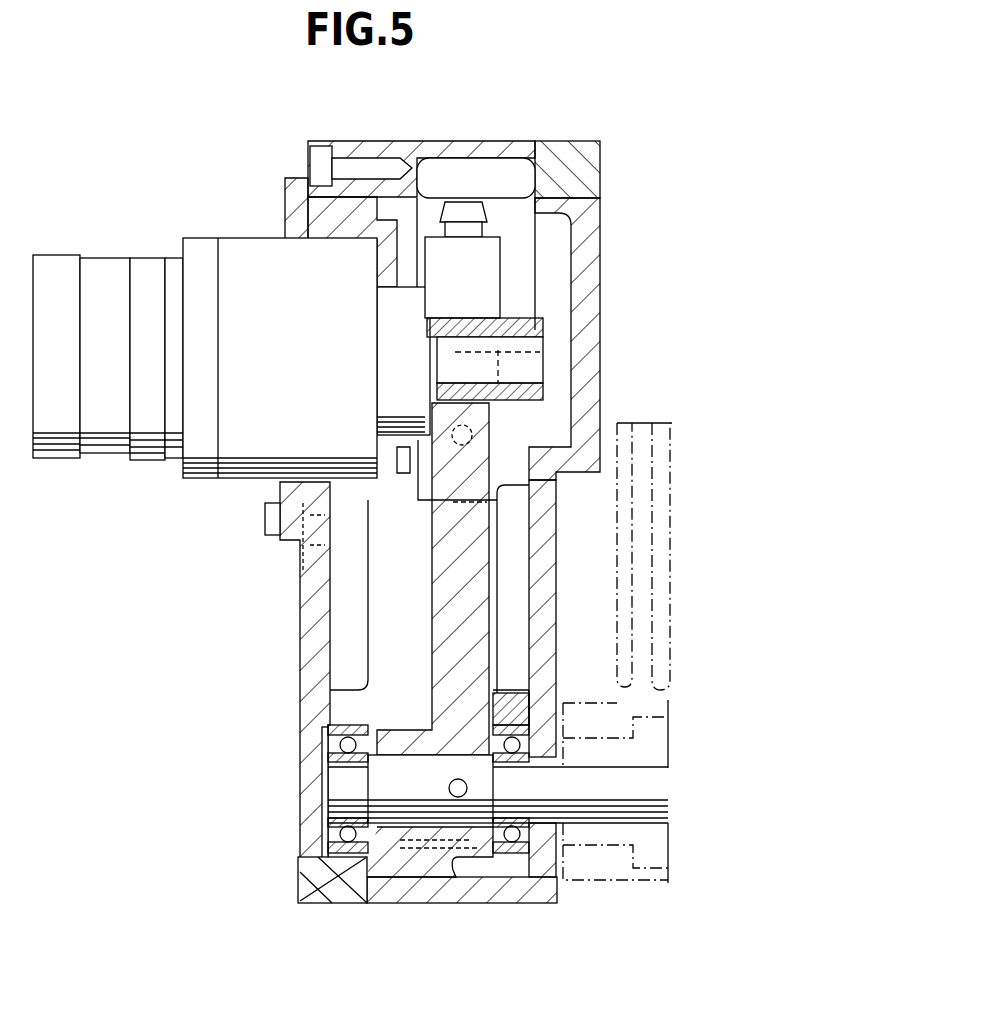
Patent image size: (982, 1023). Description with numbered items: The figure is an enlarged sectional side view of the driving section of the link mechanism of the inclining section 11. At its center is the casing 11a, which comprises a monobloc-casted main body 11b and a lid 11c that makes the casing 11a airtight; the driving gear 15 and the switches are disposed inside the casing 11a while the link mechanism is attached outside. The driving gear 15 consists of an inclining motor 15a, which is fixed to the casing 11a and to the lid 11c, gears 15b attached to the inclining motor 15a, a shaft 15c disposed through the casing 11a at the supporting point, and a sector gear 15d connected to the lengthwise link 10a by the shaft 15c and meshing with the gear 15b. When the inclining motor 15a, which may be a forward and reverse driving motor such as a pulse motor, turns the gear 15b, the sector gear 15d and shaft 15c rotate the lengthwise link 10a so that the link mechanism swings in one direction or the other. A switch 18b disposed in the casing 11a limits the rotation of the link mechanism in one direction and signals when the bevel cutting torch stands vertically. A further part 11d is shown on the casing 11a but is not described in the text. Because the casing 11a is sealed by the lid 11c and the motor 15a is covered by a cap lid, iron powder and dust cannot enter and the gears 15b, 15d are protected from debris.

The lengthwise link 10a is at (650, 640).
The inclining section 11 is at (296, 660).
The casing 11a is at (328, 890).
The main body 11b is at (503, 905).
The lid 11c is at (306, 887).
The housing flange 11d is at (287, 200).
The driving gear 15 is at (499, 570).
The inclining motor 15a is at (108, 272).
The gear 15b is at (492, 322).
The shaft 15c is at (650, 785).
The sector gear 15d is at (445, 638).
The switch 18b is at (490, 282).